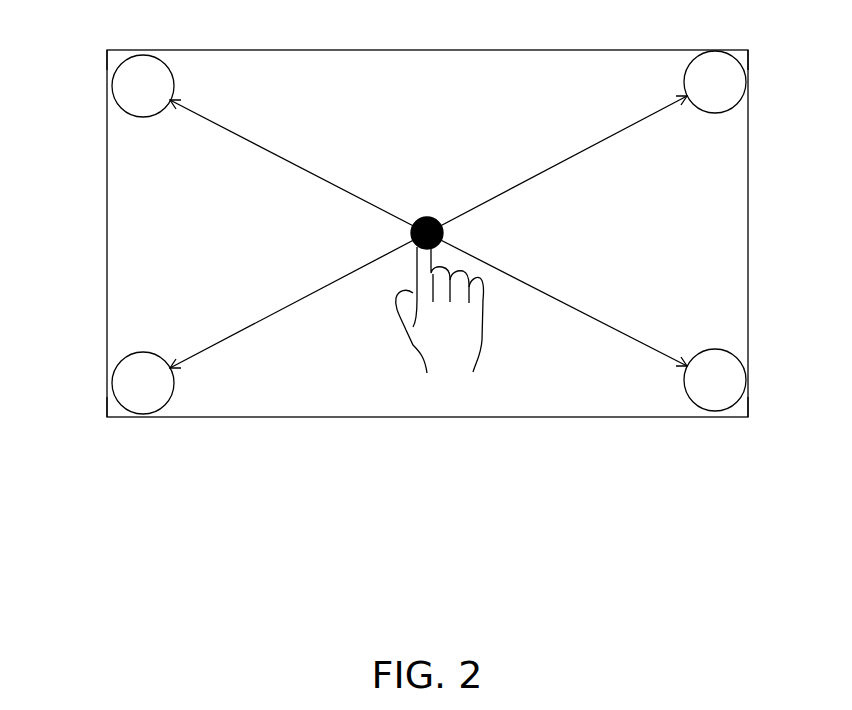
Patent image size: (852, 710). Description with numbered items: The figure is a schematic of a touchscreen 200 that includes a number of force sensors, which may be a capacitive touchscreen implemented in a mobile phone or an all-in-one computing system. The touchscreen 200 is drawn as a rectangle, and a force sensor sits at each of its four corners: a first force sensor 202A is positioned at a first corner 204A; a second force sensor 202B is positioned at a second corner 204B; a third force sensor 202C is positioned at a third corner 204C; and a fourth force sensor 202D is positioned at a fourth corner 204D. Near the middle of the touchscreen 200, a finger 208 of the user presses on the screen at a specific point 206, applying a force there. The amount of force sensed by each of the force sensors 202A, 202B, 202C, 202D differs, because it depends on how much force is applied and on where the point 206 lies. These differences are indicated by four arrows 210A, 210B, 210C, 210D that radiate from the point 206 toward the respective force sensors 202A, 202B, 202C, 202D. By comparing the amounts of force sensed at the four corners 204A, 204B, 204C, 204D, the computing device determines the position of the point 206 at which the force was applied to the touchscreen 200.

The touchscreen 200 is at (399, 644).
The first force sensor 202A is at (174, 82).
The second force sensor 202B is at (684, 82).
The third force sensor 202C is at (174, 392).
The fourth force sensor 202D is at (715, 349).
The first corner 204A is at (107, 50).
The second corner 204B is at (748, 50).
The third corner 204C is at (107, 417).
The fourth corner 204D is at (748, 417).
The point 206 is at (427, 217).
The finger 208 is at (416, 270).
The arrow 210A is at (283, 158).
The arrow 210B is at (562, 162).
The arrow 210C is at (242, 330).
The arrow 210D is at (513, 277).